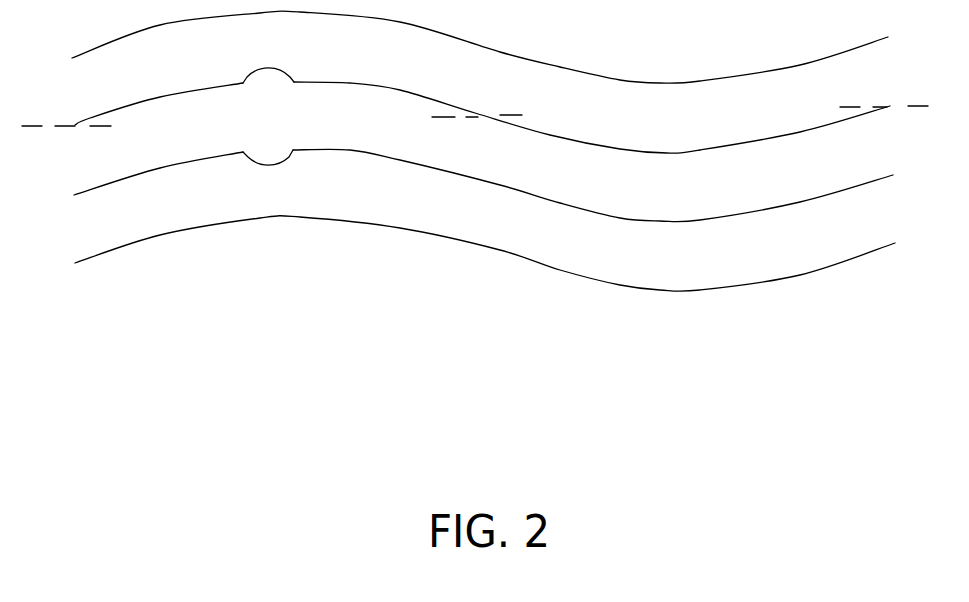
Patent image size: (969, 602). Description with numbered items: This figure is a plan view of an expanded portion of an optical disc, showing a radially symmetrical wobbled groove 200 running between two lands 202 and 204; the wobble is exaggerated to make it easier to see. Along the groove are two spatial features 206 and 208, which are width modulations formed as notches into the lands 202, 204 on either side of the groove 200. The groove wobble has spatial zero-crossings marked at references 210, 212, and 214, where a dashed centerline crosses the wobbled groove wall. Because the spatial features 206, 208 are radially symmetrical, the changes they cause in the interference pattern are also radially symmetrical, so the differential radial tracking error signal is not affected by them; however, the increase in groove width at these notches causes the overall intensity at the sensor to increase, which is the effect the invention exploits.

The wobbled groove 200 is at (483, 129).
The land 202 is at (709, 137).
The land 204 is at (713, 282).
The spatial feature 206 is at (268, 67).
The spatial feature 208 is at (268, 167).
The spatial zero-crossing 210 is at (76, 125).
The spatial zero-crossing 212 is at (481, 117).
The spatial zero-crossing 214 is at (892, 106).